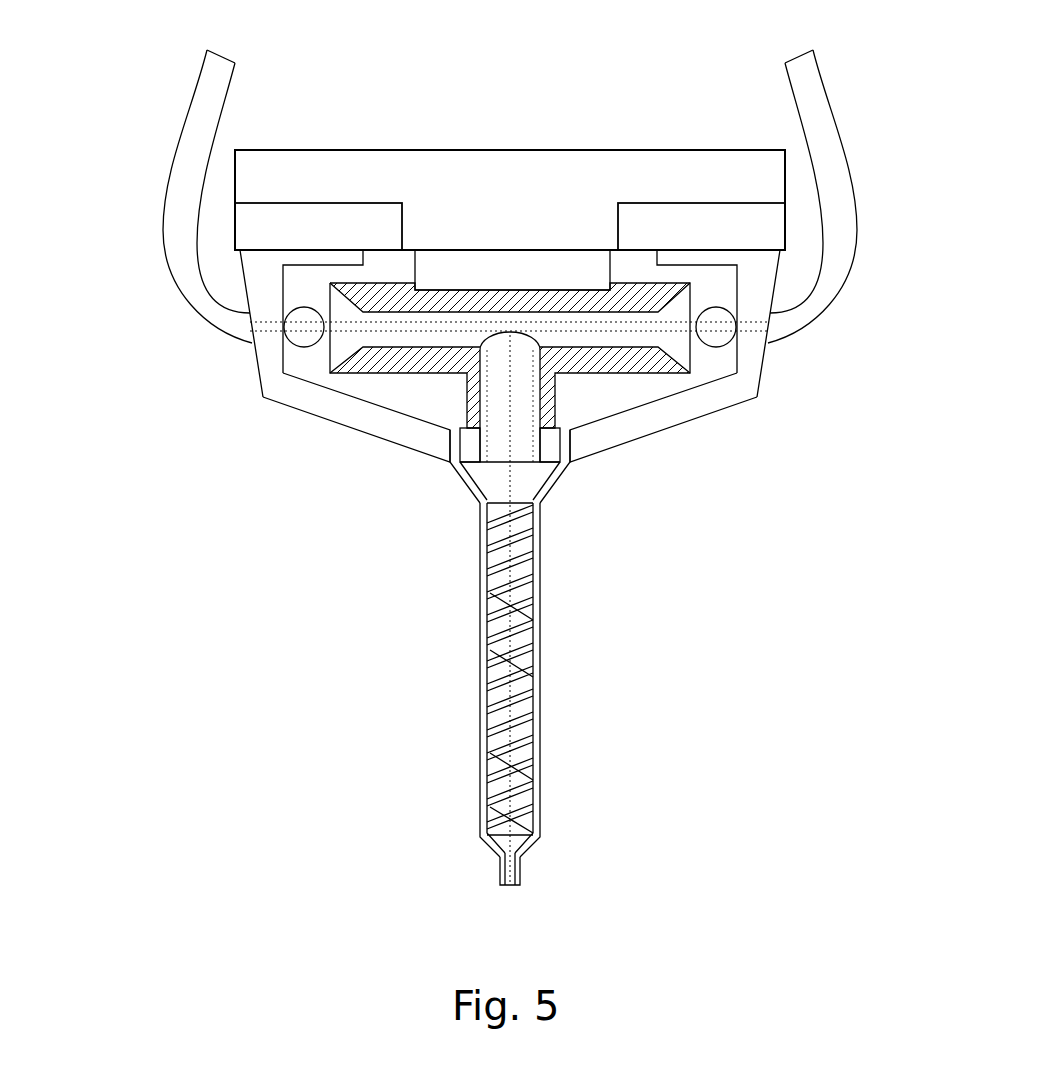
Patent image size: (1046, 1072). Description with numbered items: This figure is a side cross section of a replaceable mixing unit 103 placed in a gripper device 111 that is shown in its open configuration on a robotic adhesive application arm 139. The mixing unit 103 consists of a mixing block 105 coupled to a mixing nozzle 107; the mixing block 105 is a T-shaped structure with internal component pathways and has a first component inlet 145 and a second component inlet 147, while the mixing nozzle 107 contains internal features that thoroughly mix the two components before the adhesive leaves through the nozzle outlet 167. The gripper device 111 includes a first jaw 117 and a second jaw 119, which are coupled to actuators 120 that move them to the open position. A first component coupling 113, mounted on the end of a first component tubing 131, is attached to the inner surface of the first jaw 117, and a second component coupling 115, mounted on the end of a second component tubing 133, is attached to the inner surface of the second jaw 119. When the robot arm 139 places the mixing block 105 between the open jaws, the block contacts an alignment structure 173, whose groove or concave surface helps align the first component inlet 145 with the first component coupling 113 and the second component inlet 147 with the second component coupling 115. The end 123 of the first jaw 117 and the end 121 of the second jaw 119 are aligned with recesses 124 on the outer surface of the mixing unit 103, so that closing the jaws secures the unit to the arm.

The mixing unit 103 is at (513, 634).
The mixing block 105 is at (658, 355).
The mixing nozzle 107 is at (545, 610).
The gripper device 111 is at (464, 383).
The first component coupling 113 is at (283, 372).
The second component coupling 115 is at (722, 345).
The first jaw 117 is at (338, 412).
The second jaw 119 is at (622, 433).
The actuators 120 is at (312, 215).
The end of the second jaw 121 is at (582, 458).
The end of the first jaw 123 is at (442, 453).
The recesses 124 is at (458, 430).
The first component tubing 131 is at (167, 267).
The second component tubing 133 is at (813, 320).
The robotic adhesive application arm 139 is at (598, 203).
The first component inlet 145 is at (342, 320).
The second component inlet 147 is at (680, 315).
The nozzle outlet 167 is at (502, 892).
The alignment structure 173 is at (487, 267).